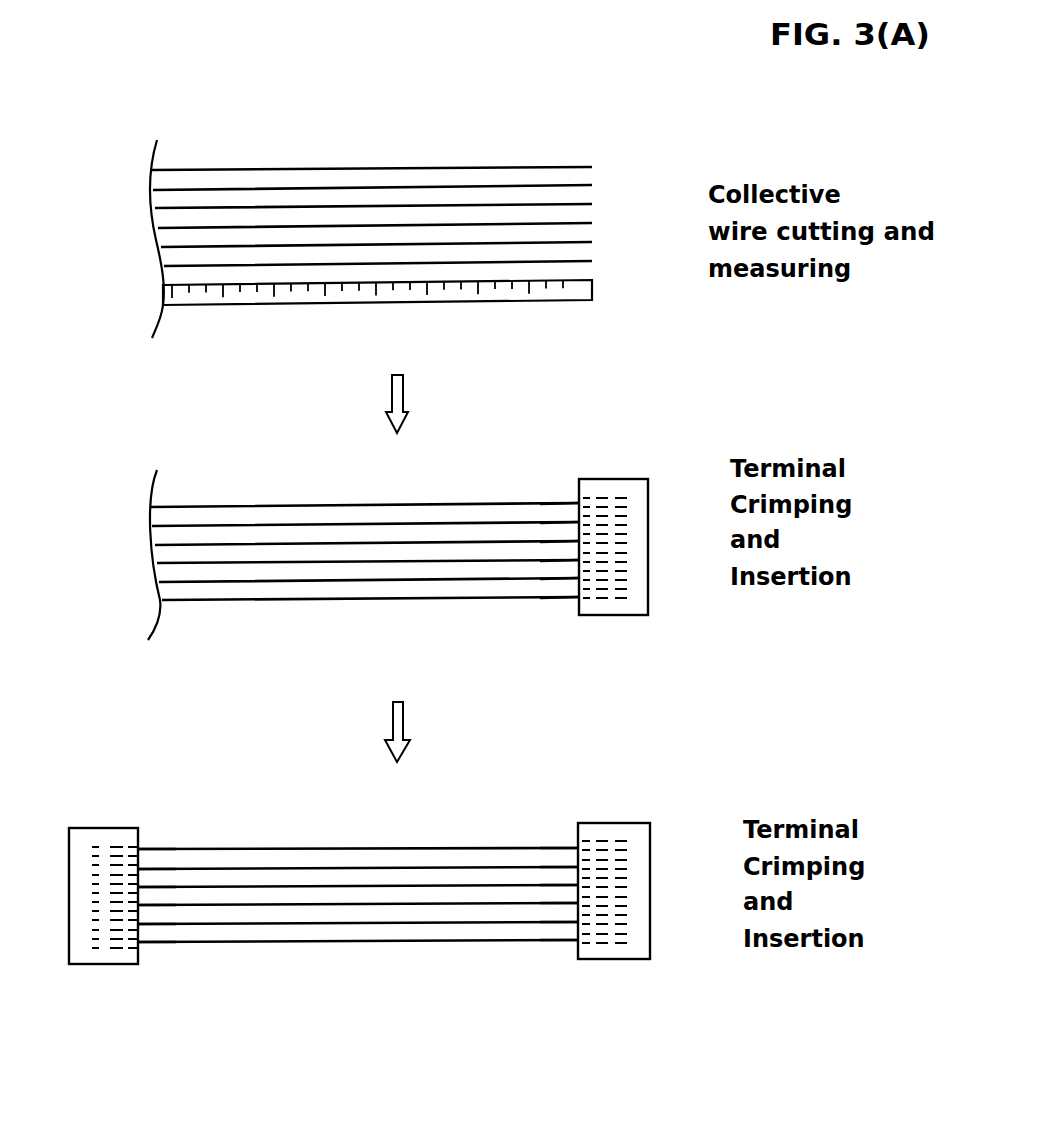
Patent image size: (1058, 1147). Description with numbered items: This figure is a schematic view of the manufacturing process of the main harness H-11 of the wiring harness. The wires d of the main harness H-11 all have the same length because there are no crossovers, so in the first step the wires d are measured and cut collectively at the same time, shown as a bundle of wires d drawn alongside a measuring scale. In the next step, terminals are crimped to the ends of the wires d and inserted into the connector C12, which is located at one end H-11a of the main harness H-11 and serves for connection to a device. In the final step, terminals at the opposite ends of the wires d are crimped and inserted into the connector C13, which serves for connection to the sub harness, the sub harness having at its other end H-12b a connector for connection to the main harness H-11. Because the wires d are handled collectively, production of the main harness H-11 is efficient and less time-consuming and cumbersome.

The wires d is at (263, 167).
The connector C12 is at (635, 492).
The connector C13 is at (98, 833).
The main harness H-11 is at (352, 956).
The one end of main harness H-11a is at (573, 600).
The other end of sub harness H-12b is at (140, 947).